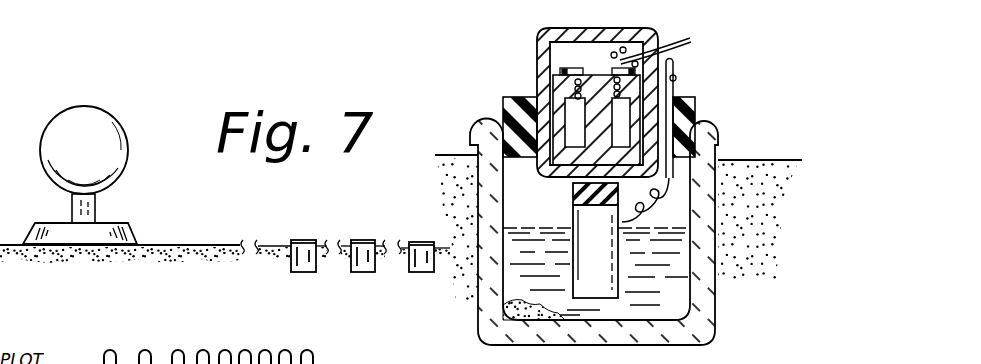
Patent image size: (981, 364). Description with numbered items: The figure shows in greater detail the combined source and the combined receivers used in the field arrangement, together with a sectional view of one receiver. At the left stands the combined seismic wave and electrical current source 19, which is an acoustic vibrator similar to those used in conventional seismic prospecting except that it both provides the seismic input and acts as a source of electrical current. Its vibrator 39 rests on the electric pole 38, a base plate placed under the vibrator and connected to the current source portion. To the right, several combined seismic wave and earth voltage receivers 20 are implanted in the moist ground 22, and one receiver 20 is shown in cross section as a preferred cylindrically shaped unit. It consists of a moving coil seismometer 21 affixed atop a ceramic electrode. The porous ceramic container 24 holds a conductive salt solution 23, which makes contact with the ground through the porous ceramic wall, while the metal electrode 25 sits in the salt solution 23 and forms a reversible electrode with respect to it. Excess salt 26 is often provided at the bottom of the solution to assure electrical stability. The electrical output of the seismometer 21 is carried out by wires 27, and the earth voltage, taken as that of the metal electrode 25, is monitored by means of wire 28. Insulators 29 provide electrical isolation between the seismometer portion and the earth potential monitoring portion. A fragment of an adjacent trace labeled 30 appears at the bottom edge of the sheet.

The combined seismic wave and electrical current source 19 is at (168, 162).
The vibrator 39 is at (112, 118).
The electric pole 38 is at (130, 224).
The moist ground 22 is at (305, 231).
The combined seismic wave and earth voltage receiver 20 is at (400, 231).
The porous ceramic container 24 is at (710, 232).
The conductive salt solution 23 is at (680, 290).
The metal electrode 25 is at (572, 212).
The insulators 29 is at (537, 153).
The excess salt 26 is at (503, 311).
The moving coil seismometer 21 is at (627, 30).
The wires 27 is at (685, 41).
The wire 28 is at (677, 59).
The plot trace 30 is at (339, 357).